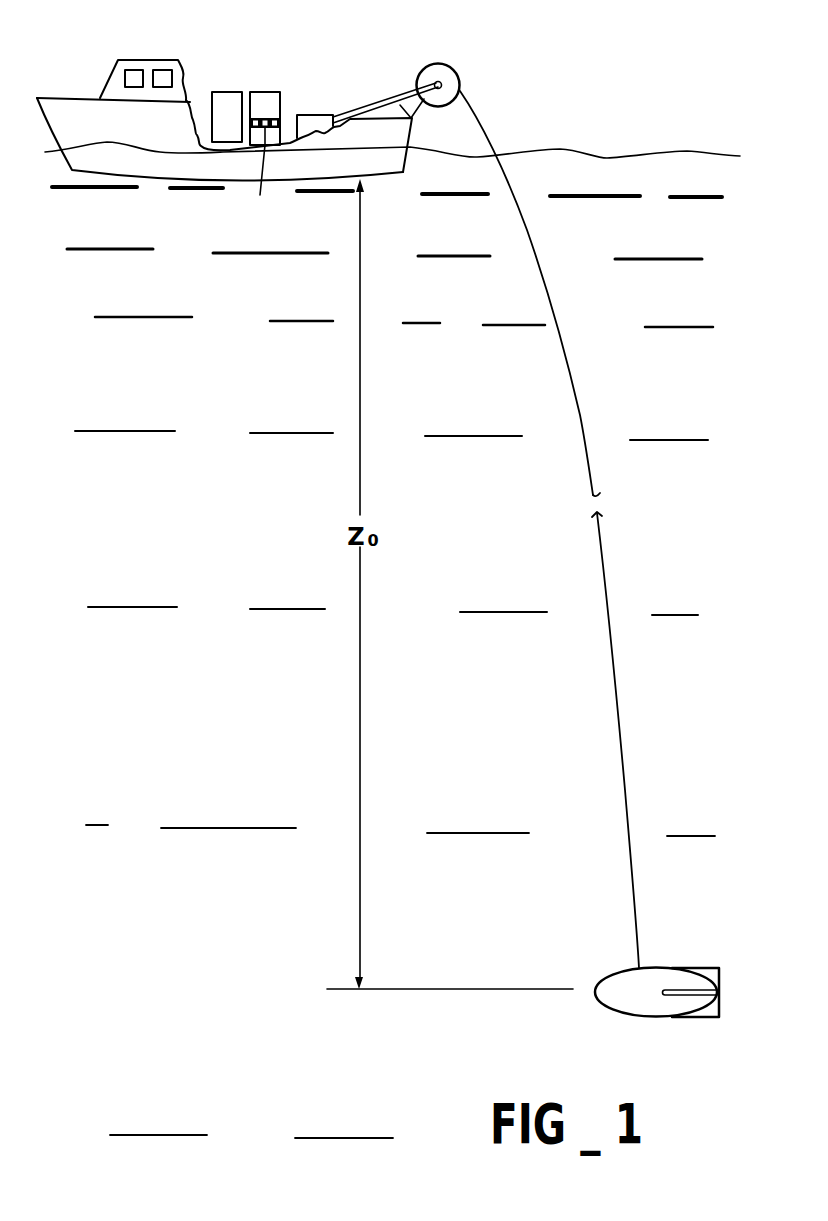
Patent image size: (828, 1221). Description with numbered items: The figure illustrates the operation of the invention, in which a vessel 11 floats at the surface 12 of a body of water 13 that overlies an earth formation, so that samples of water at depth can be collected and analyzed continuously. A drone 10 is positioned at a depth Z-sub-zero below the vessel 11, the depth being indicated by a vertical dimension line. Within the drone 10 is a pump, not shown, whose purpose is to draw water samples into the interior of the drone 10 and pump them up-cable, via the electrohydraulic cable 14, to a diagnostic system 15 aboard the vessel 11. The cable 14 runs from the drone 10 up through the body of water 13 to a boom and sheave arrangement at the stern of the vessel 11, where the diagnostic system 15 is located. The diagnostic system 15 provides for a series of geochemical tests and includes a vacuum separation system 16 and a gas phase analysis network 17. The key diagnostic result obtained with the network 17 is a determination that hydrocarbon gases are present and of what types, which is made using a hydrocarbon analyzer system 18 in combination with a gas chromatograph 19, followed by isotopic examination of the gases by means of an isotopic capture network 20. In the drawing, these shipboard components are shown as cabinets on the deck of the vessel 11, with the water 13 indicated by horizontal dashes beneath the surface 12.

The drone 10 is at (605, 975).
The vessel 11 is at (140, 60).
The surface 12 is at (607, 157).
The body of water 13 is at (132, 370).
The electrohydraulic cable 14 is at (572, 389).
The diagnostic system 15 is at (297, 97).
The vacuum separation system 16 is at (315, 118).
The gas phase analysis network 17 is at (242, 88).
The hydrocarbon analyzer system 18 is at (266, 92).
The gas chromatograph 19 is at (222, 92).
The isotopic capture network 20 is at (266, 175).